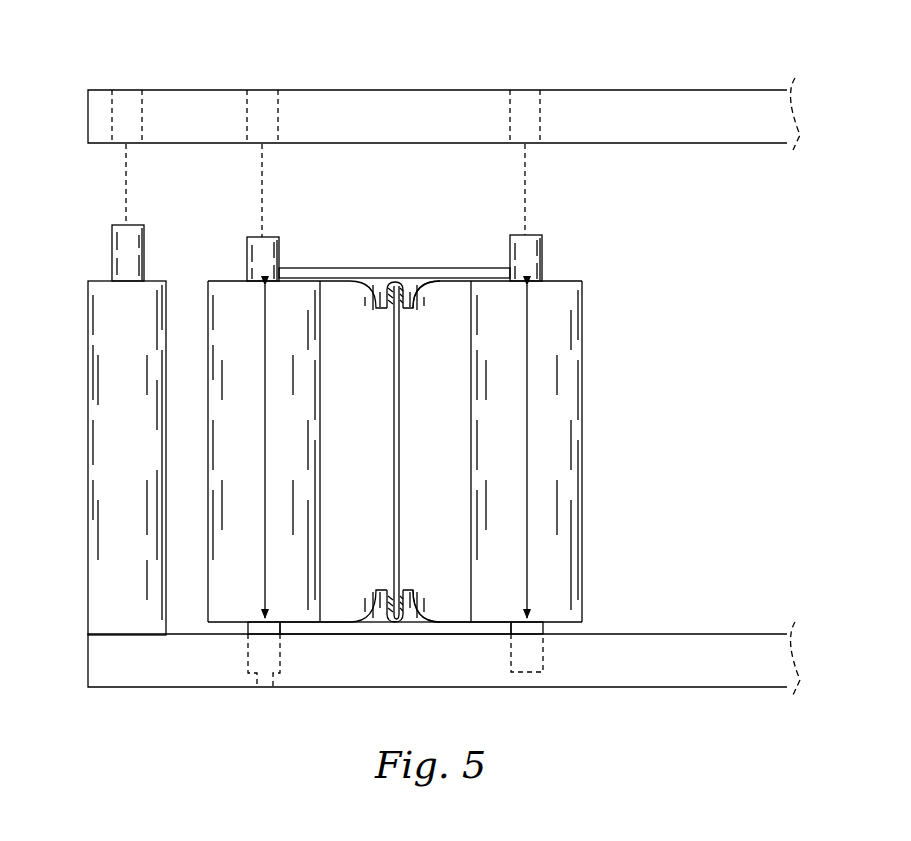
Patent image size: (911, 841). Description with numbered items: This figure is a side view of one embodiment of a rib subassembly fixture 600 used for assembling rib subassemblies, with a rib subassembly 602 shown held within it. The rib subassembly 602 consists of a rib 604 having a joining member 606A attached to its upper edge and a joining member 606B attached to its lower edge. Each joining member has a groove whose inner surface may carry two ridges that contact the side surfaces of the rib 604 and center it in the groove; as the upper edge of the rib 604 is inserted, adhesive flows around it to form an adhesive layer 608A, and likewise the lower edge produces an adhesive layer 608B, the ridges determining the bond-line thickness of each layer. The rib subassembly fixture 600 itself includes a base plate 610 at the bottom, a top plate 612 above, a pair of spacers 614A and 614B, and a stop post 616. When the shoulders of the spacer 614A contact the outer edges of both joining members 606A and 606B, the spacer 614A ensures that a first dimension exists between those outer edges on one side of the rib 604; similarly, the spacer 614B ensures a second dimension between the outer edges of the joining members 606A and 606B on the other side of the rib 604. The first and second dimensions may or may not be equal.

The rib subassembly fixture 600 is at (467, 57).
The rib subassembly 602 is at (409, 437).
The rib 604 is at (394, 472).
The joining member 606A is at (437, 284).
The joining member 606B is at (440, 610).
The adhesive layer 608A is at (388, 312).
The adhesive layer 608B is at (385, 588).
The base plate 610 is at (632, 687).
The top plate 612 is at (207, 90).
The spacer 614A is at (222, 283).
The spacer 614B is at (578, 548).
The stop post 616 is at (98, 383).